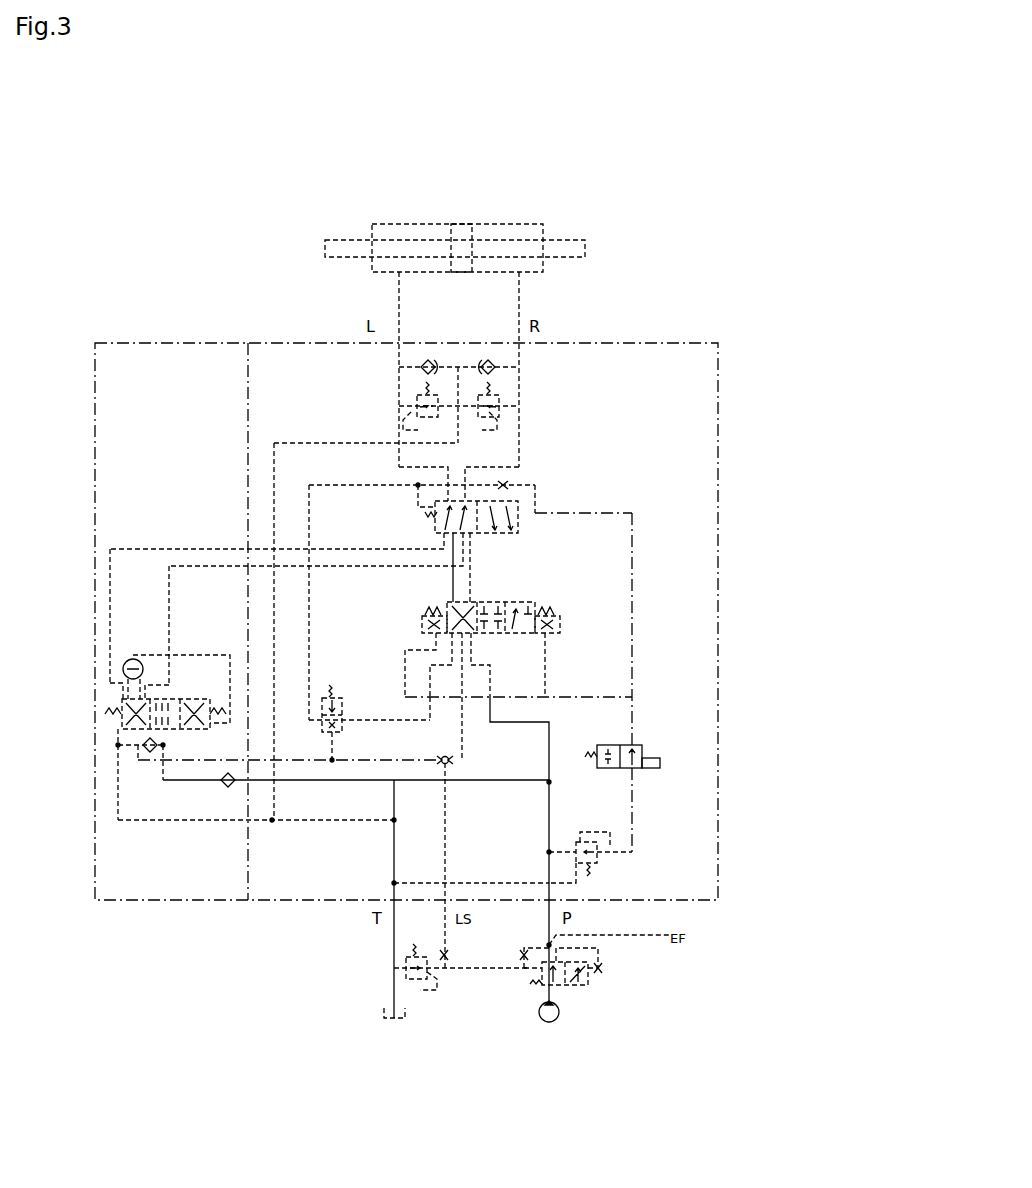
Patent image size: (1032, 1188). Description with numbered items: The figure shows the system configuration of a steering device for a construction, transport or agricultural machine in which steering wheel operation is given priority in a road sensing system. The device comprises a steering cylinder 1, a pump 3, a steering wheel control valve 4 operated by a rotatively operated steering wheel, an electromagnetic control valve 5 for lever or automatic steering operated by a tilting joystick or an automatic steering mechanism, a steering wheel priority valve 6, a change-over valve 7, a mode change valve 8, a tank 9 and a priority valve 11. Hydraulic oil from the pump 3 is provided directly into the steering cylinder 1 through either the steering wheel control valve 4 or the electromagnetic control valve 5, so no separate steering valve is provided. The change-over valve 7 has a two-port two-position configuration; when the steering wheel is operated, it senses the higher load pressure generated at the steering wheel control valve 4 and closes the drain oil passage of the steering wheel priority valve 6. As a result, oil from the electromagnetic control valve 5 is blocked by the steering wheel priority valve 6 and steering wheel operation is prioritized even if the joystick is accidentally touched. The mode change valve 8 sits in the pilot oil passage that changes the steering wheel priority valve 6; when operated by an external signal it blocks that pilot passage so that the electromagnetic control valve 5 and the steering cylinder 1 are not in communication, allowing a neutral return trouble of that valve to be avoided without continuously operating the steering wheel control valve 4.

The steering cylinder 1 is at (372, 345).
The pump 3 is at (592, 1013).
The steering wheel control valve 4 is at (108, 755).
The electromagnetic control valve for lever or automatic steering 5 is at (437, 605).
The steering wheel priority valve 6 is at (525, 525).
The change-over valve 7 is at (325, 738).
The mode change valve 8 is at (652, 775).
The tank 9 is at (396, 1032).
The priority valve 11 is at (652, 960).